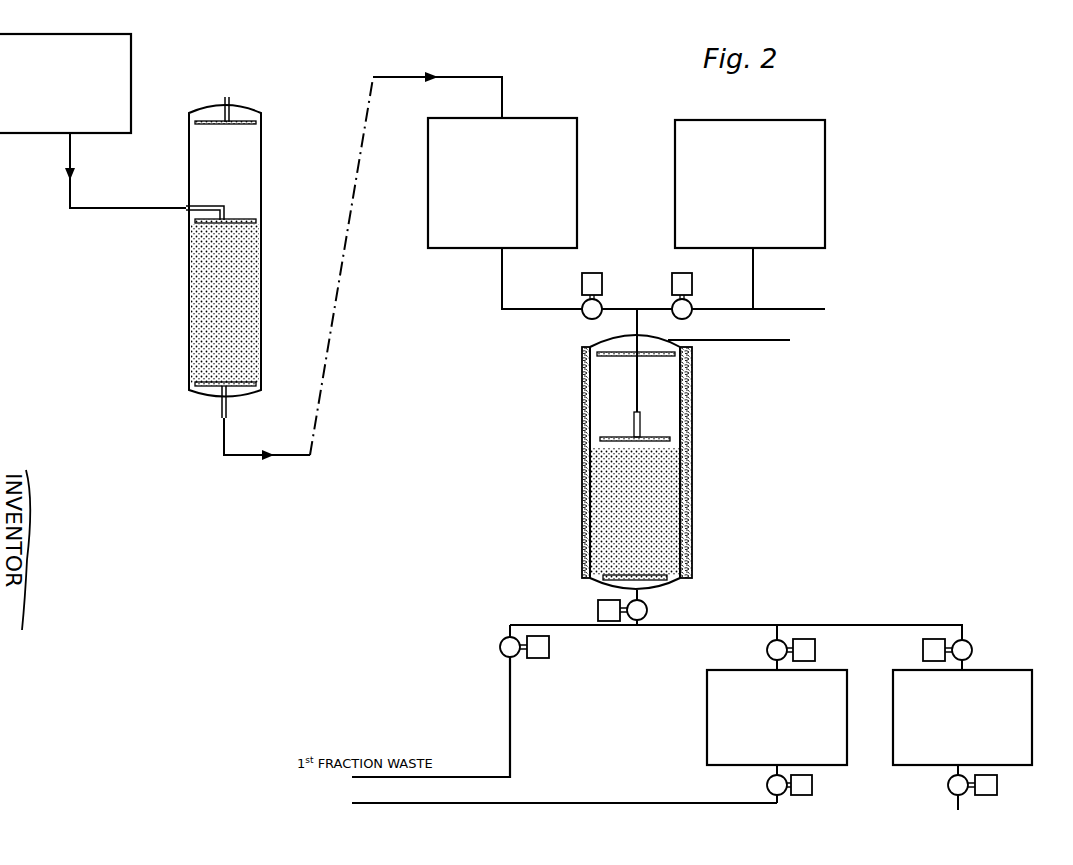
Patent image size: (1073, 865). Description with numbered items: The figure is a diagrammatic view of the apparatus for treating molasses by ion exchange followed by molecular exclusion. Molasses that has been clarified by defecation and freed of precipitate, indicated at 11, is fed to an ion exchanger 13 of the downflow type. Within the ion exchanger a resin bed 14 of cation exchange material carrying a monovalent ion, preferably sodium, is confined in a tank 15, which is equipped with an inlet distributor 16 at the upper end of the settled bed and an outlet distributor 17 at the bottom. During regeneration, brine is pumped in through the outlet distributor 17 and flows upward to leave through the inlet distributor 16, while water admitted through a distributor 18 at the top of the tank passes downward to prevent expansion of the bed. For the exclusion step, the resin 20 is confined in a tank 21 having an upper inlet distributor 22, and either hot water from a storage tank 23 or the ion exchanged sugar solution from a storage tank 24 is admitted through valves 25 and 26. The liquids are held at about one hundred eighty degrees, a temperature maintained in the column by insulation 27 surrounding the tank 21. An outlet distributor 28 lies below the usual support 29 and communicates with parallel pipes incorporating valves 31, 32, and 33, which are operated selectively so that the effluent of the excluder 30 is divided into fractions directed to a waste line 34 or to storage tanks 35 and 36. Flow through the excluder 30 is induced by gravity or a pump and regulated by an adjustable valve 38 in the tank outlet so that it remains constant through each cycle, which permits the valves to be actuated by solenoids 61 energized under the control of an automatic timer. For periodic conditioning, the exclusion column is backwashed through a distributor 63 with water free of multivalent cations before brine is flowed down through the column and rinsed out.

The clarified molasses source 11 is at (131, 81).
The ion exchanger 13 is at (201, 253).
The resin bed 14 is at (201, 329).
The tank 15 is at (262, 307).
The inlet distributor 16 is at (256, 218).
The outlet distributor 17 is at (202, 396).
The distributor 18 is at (240, 122).
The resin 20 is at (598, 484).
The tank 21 is at (681, 486).
The upper inlet distributor 22 is at (672, 437).
The hot water storage tank 23 is at (822, 219).
The storage tank 24 is at (433, 231).
The valve 25 is at (586, 293).
The valve 26 is at (689, 316).
The insulation 27 is at (688, 462).
The outlet distributor 28 is at (616, 585).
The support 29 is at (667, 578).
The excluder 30 is at (663, 449).
The valve 31 is at (501, 640).
The valve 32 is at (767, 650).
The valve 33 is at (972, 645).
The waste line 34 is at (512, 750).
The storage tank 35 is at (715, 735).
The storage tank 36 is at (1020, 730).
The adjustable valve 38 is at (647, 607).
The solenoid 61 is at (600, 283).
The distributor 63 is at (600, 354).